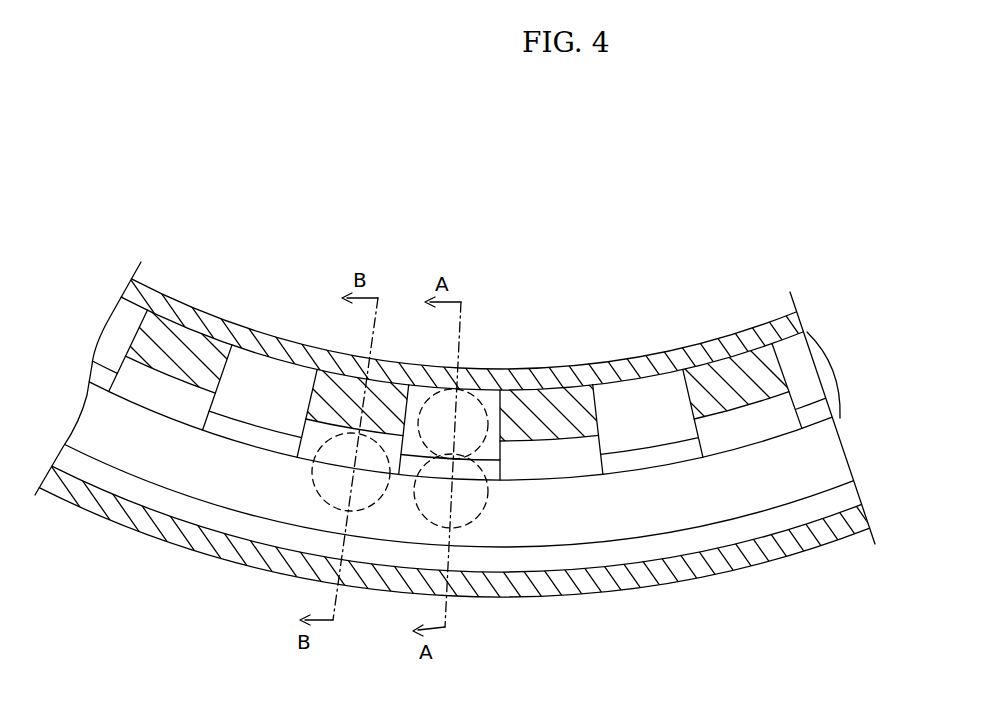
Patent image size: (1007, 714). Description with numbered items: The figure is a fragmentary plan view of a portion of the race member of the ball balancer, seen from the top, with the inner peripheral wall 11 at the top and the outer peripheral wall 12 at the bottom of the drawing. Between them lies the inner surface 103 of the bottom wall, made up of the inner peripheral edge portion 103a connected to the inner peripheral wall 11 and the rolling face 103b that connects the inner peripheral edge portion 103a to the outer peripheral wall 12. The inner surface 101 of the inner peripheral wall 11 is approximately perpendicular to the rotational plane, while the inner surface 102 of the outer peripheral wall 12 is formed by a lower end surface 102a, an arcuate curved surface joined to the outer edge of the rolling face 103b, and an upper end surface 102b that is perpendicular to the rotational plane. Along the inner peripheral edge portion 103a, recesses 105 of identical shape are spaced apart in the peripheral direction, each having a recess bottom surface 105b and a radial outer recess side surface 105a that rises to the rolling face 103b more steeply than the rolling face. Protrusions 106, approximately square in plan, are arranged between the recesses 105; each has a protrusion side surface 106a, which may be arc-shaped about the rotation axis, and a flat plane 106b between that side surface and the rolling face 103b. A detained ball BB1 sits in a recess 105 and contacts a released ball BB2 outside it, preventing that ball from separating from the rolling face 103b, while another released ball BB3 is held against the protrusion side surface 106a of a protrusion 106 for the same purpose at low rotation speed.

The inner peripheral wall 11 is at (708, 338).
The outer peripheral wall 12 is at (723, 580).
The inner surface of the inner peripheral wall 101 is at (642, 378).
The inner surface of the outer peripheral wall 102 is at (935, 442).
The lower end surface 102a is at (847, 482).
The upper end surface 102b is at (850, 504).
The inner surface of the bottom wall 103 is at (920, 352).
The inner peripheral edge portion 103a is at (827, 372).
The rolling face 103b is at (834, 450).
The recess 105 is at (465, 420).
The recess side surface 105a is at (491, 470).
The recess bottom surface 105b is at (490, 398).
The protrusion 106 is at (345, 382).
The protrusion side surface 106a is at (310, 424).
The flat plane 106b is at (306, 445).
The detained ball BB1 is at (427, 392).
The released ball BB2 is at (414, 522).
The released ball BB3 is at (301, 502).